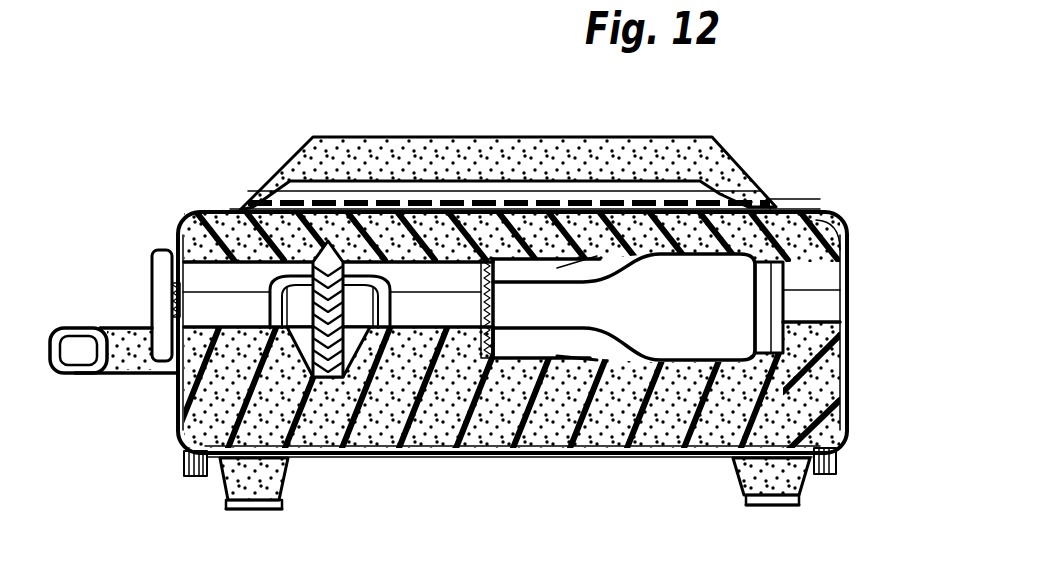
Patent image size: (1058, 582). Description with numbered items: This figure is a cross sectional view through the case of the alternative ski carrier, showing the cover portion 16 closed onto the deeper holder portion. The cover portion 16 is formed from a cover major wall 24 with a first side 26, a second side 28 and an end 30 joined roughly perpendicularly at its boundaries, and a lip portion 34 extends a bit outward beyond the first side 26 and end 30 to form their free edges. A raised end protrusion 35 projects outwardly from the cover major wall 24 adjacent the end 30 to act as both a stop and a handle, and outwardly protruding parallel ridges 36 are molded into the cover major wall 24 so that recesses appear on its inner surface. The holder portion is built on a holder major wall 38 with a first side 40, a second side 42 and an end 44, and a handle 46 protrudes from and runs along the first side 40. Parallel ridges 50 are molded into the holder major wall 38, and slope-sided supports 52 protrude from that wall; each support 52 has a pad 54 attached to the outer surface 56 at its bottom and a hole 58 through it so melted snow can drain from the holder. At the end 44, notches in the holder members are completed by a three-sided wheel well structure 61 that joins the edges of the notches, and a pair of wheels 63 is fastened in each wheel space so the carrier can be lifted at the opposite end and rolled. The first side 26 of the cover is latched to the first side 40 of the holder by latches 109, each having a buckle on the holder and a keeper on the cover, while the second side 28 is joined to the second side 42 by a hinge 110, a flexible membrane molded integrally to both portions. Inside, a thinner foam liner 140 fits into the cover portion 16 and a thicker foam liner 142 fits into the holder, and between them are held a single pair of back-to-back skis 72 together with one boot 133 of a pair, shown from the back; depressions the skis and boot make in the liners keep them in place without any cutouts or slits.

The cover portion 16 is at (181, 213).
The cover major wall 24 is at (217, 207).
The first side 26 is at (175, 236).
The second side 28 is at (838, 238).
The end 30 is at (812, 279).
The lip portion 34 is at (152, 288).
The raised end protrusion 35 is at (478, 135).
The ridges 36 is at (288, 196).
The holder major wall 38 is at (213, 482).
The first side 40 is at (177, 407).
The second side 42 is at (848, 366).
The end 44 is at (812, 313).
The handle 46 is at (73, 329).
The ridges 50 is at (500, 465).
The supports 52 is at (290, 473).
The pad 54 is at (253, 513).
The outer surface 56 is at (283, 496).
The hole 58 is at (222, 504).
The three-sided wheel well structure 61 is at (170, 437).
The wheels 63 is at (184, 466).
The skis 72 is at (332, 240).
The latches 109 is at (152, 305).
The hinge 110 is at (845, 290).
The boot 133 is at (758, 204).
The thinner foam liner 140 is at (820, 207).
The thicker foam liner 142 is at (557, 428).